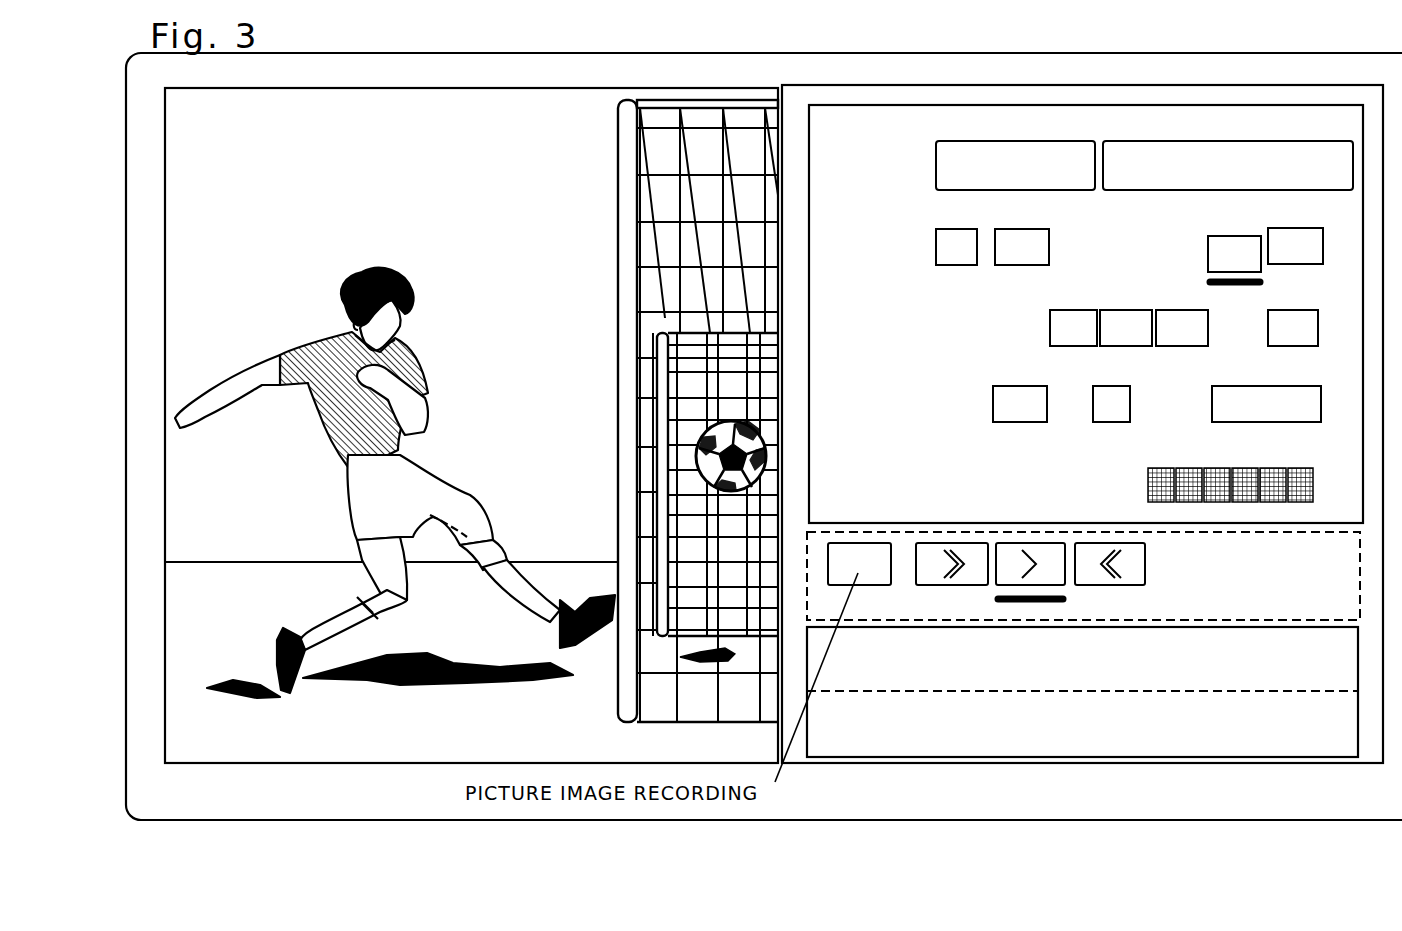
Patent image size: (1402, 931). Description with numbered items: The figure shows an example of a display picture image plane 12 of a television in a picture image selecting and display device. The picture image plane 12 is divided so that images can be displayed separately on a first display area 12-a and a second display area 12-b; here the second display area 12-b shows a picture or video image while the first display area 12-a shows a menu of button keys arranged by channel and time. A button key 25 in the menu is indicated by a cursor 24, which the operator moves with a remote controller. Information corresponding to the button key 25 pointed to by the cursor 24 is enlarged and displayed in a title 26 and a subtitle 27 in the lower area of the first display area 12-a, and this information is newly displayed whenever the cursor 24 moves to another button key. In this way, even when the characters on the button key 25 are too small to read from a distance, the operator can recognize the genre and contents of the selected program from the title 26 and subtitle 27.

The picture image plane 12 is at (890, 52).
The first display area 12-a is at (1258, 108).
The second display area 12-b is at (420, 88).
The cursor 24 is at (1262, 283).
The button key 25 is at (1235, 236).
The title 26 is at (899, 672).
The subtitle 27 is at (1057, 752).